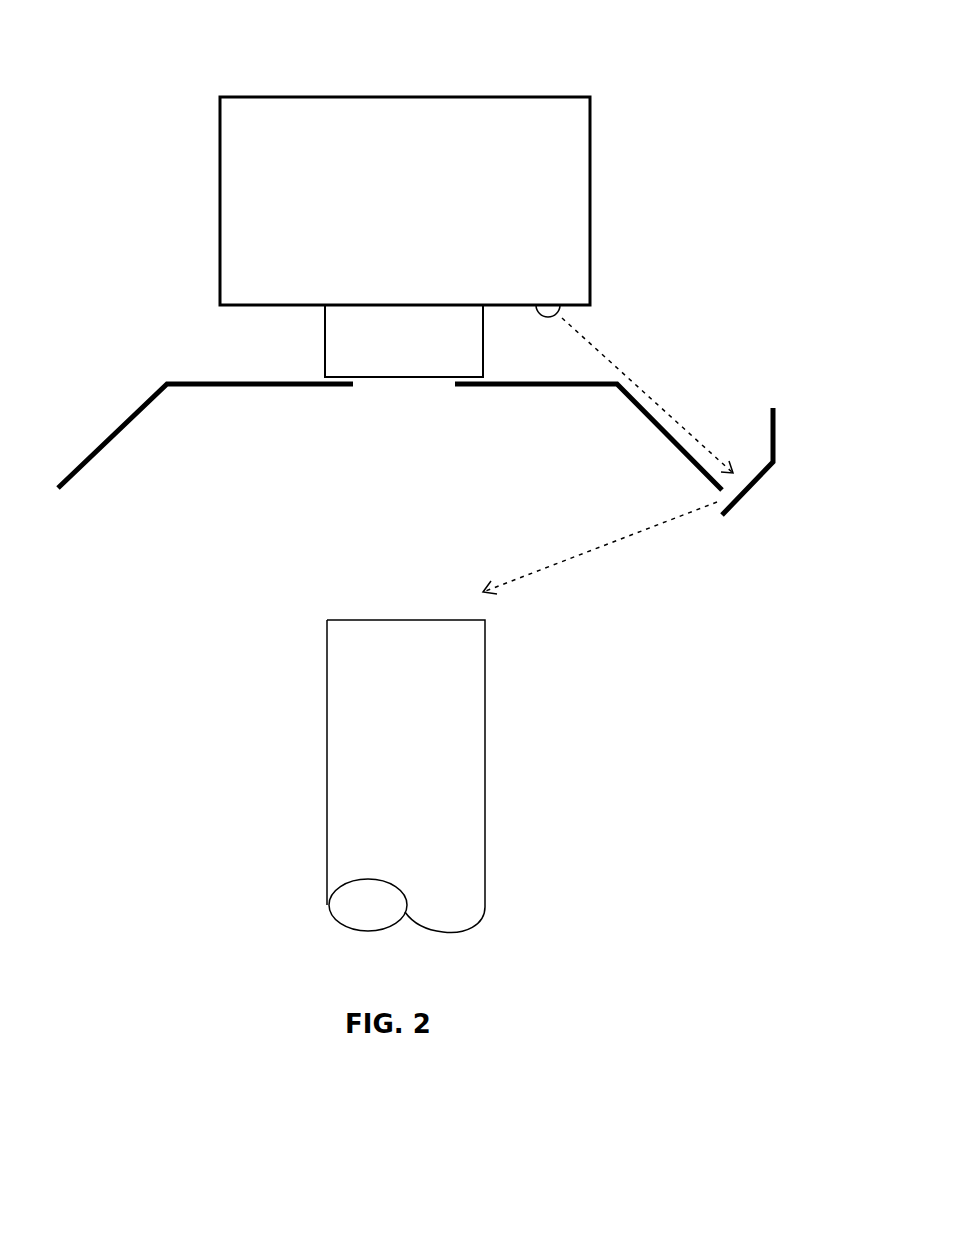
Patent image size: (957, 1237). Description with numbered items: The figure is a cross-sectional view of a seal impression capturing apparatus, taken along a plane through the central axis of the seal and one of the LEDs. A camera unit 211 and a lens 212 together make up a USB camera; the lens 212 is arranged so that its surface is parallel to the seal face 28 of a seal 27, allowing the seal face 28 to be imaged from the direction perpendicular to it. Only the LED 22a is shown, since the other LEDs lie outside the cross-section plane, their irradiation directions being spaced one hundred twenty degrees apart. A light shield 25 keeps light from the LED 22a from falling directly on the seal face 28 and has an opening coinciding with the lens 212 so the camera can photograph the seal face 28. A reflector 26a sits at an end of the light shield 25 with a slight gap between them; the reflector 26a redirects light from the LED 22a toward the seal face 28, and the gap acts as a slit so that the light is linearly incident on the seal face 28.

The camera unit 211 is at (540, 97).
The lens 212 is at (325, 343).
The LED 22a is at (562, 308).
The light shield 25 is at (467, 385).
The reflector 26a is at (777, 440).
The seal 27 is at (407, 733).
The seal face 28 is at (388, 620).